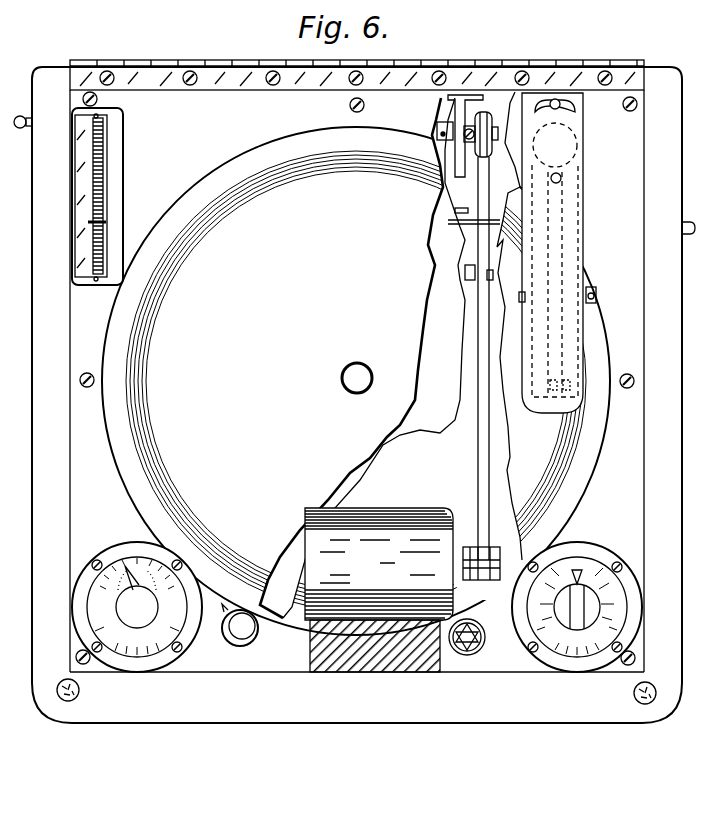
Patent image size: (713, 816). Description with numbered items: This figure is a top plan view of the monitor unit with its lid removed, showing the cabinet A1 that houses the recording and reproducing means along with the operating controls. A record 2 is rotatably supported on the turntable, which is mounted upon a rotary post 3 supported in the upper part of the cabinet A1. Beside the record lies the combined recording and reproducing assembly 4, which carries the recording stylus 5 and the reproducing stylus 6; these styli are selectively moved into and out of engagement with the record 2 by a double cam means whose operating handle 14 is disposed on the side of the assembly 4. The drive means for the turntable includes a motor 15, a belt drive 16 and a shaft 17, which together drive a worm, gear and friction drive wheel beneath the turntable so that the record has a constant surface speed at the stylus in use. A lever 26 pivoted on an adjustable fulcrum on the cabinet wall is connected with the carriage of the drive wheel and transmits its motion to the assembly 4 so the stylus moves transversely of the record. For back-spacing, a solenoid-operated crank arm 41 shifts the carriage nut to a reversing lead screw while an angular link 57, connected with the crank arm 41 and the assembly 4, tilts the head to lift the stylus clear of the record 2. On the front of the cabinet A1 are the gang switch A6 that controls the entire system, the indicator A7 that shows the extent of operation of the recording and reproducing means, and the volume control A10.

The cabinet A1 is at (386, 713).
The record 2 is at (420, 404).
The rotary post 3 is at (348, 374).
The combined recording and reproducing assembly 4 is at (571, 267).
The recording stylus 5 is at (566, 392).
The reproducing stylus 6 is at (550, 392).
The operating handle 14 is at (596, 297).
The motor 15 is at (366, 571).
The belt drive 16 is at (478, 480).
The shaft 17 is at (465, 185).
The lever 26 is at (465, 275).
The crank arm 41 is at (467, 224).
The angular link 57 is at (468, 159).
The gang switch A6 is at (578, 542).
The indicator A7 is at (126, 166).
The volume control A10 is at (230, 645).